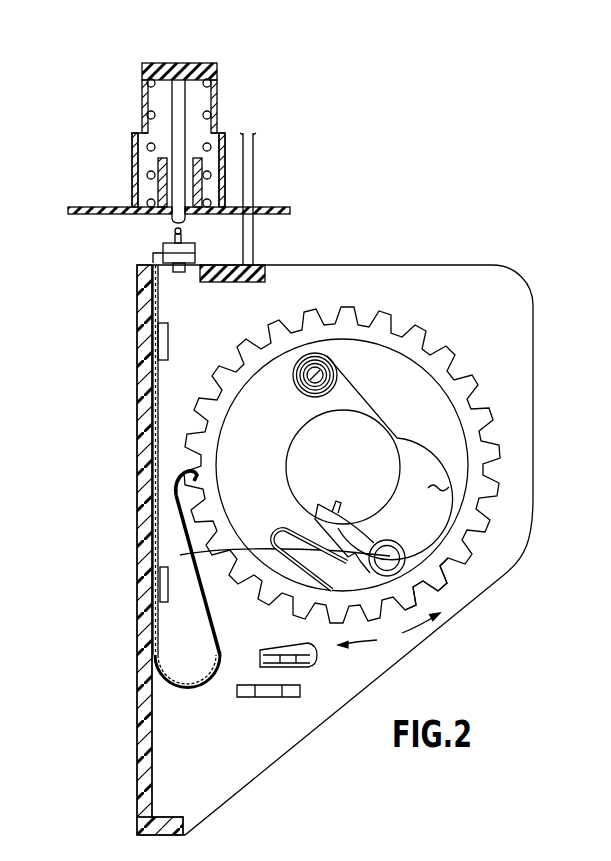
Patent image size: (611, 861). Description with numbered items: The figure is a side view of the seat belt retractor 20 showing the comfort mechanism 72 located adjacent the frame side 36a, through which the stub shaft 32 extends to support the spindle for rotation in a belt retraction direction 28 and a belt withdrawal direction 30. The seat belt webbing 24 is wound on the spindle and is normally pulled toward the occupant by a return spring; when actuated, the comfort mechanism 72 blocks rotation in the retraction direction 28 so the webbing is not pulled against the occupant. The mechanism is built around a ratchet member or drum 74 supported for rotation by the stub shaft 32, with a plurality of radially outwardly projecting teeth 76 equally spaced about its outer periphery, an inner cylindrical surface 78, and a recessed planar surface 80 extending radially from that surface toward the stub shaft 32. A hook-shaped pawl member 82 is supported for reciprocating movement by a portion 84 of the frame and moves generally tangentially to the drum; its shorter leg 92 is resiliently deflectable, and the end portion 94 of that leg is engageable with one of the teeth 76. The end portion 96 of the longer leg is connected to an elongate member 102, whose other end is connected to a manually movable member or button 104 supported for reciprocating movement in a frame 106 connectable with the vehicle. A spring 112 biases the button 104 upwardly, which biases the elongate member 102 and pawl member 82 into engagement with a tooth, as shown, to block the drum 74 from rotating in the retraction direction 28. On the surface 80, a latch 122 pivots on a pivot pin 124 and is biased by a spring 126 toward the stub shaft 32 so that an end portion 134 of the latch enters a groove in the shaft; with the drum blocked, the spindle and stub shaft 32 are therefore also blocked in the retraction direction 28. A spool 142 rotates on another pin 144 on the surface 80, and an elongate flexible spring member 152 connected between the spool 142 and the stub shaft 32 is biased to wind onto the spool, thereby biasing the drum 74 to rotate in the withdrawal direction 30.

The seat belt retractor 20 is at (387, 233).
The seat belt webbing 24 is at (245, 177).
The belt retraction direction 28 is at (417, 623).
The belt withdrawal direction 30 is at (368, 643).
The stub shaft 32 is at (372, 462).
The frame side 36a is at (205, 780).
The comfort mechanism 72 is at (163, 407).
The ratchet member or drum 74 is at (437, 573).
The teeth 76 is at (458, 363).
The inner cylindrical surface 78 is at (480, 413).
The recessed planar surface 80 is at (382, 516).
The hook-shaped pawl member 82 is at (212, 686).
The portion of the frame 84 is at (146, 754).
The shorter leg 92 is at (210, 607).
The end portion of the leg 94 is at (183, 471).
The end portion of the longer leg 96 is at (160, 252).
The elongate member 102 is at (173, 235).
The manually movable member or button 104 is at (215, 73).
The frame 106 is at (135, 183).
The spring 112 is at (148, 105).
The latch 122 is at (370, 535).
The pivot pin 124 is at (390, 556).
The spring 126 is at (180, 555).
The end portion of the latch 134 is at (318, 518).
The spool 142 is at (325, 387).
The pin 144 is at (311, 383).
The elongate flexible spring member 152 is at (365, 392).